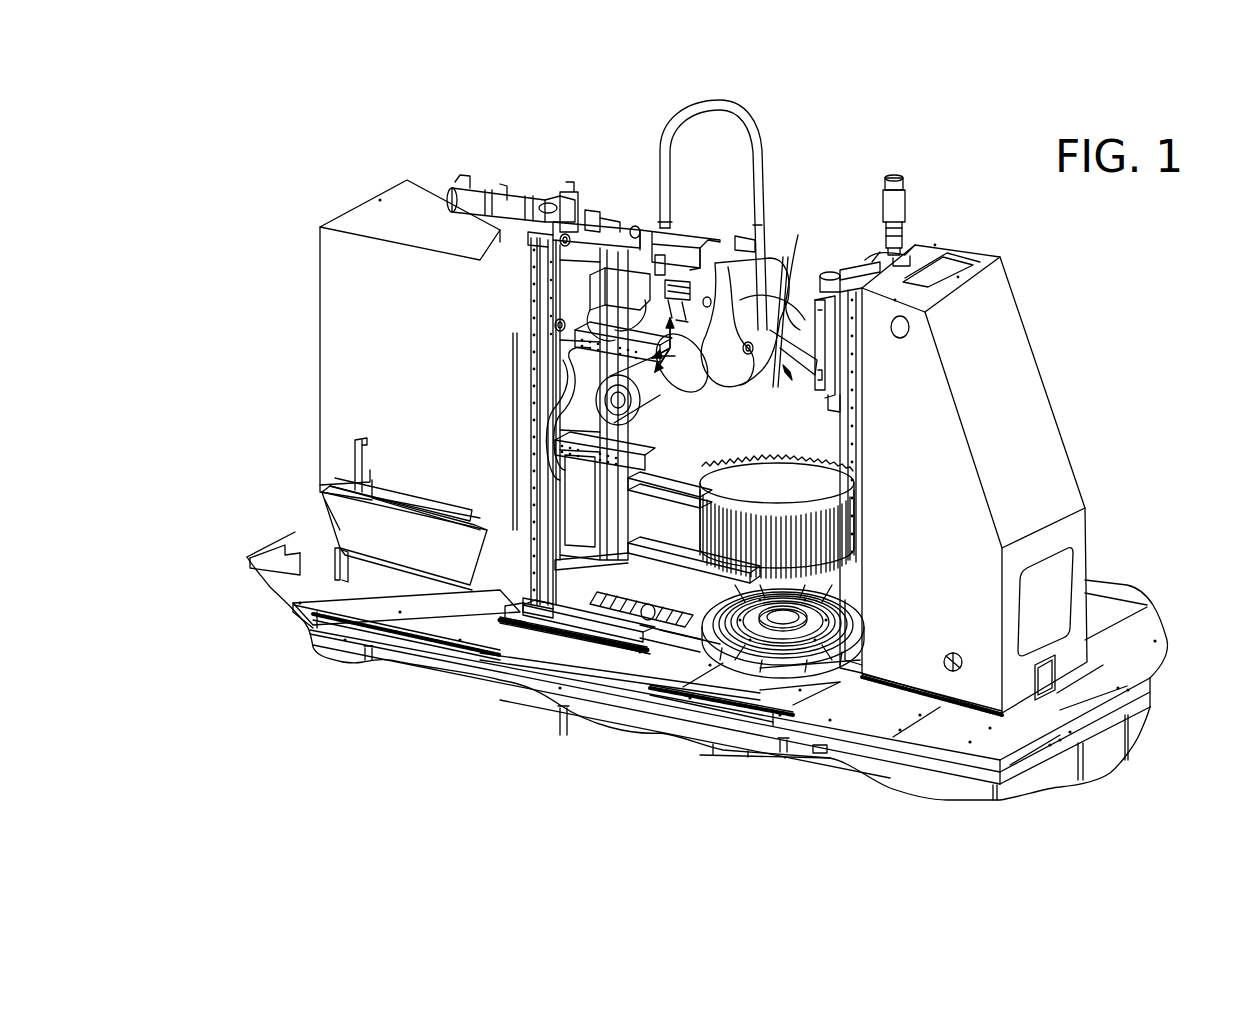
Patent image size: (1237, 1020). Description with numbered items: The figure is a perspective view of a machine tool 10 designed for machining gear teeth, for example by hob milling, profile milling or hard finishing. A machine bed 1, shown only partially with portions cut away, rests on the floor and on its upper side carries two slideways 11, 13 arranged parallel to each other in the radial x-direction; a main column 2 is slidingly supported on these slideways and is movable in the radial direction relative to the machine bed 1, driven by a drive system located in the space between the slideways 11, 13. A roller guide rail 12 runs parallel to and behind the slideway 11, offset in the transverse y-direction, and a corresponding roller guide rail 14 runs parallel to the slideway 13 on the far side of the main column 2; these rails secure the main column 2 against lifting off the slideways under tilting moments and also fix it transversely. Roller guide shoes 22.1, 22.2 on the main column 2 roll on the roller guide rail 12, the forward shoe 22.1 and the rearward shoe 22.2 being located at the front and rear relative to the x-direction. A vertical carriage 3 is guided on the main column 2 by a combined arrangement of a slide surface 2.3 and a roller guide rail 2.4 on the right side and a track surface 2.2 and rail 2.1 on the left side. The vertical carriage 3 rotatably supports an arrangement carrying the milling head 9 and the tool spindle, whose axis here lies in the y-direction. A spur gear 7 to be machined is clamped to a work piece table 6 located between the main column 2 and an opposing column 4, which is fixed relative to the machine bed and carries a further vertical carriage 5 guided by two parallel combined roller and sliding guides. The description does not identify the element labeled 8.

The machine bed 1 is at (372, 683).
The main column 2 is at (366, 200).
The rail 2.1 is at (527, 582).
The track surface 2.2 is at (548, 622).
The slide surface (track) 2.3 is at (612, 497).
The roller guide rail 2.4 is at (632, 455).
The vertical carriage 3 is at (600, 248).
The opposing column 4 is at (996, 382).
The further vertical carriage 5 is at (840, 268).
The work piece table 6 is at (803, 657).
The spur gear 7 is at (800, 506).
The hose 8 is at (645, 228).
The milling head 9 is at (802, 232).
The machine tool 10 is at (785, 118).
The slideway 11 is at (658, 642).
The roller guide rail 12 is at (598, 648).
The slideway 13 is at (668, 637).
The roller guide rail 14 is at (650, 636).
The roller guide shoe 22.1 is at (497, 590).
The roller guide shoe 22.2 is at (316, 553).